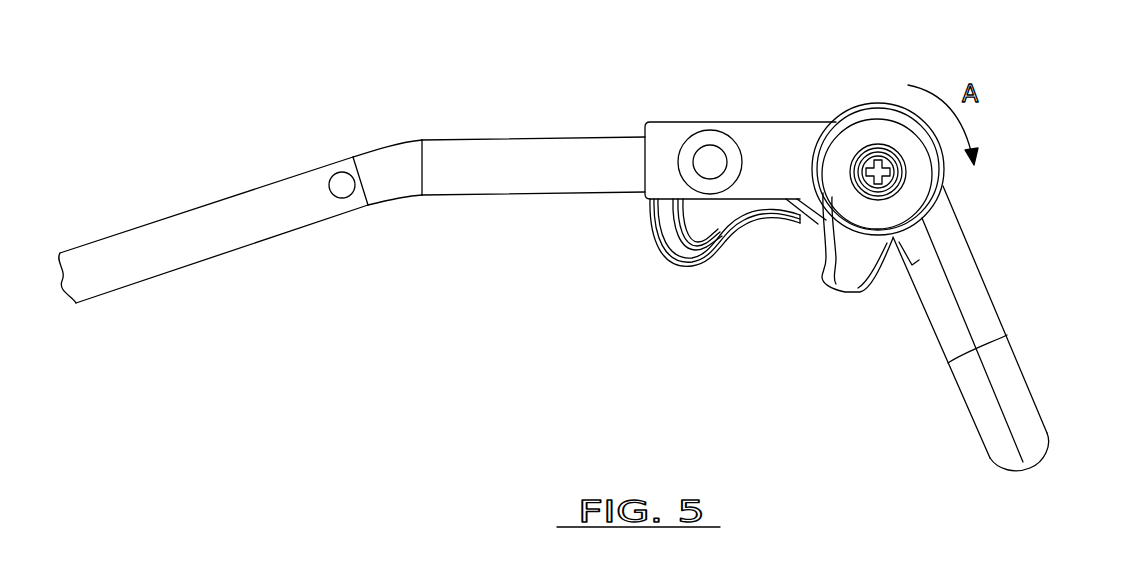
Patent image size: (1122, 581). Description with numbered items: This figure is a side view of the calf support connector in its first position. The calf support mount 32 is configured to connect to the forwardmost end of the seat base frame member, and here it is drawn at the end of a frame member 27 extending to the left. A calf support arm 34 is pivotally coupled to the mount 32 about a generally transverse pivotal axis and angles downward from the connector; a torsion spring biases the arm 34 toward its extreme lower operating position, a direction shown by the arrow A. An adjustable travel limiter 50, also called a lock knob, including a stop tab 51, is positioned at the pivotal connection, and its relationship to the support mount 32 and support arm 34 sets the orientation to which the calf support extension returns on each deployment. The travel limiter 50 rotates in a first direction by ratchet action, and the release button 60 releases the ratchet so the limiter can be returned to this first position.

The handle arm 27 is at (483, 134).
The calf support mount 32 is at (728, 108).
The calf support arm 34 is at (1000, 287).
The release button 60 is at (858, 167).
The adjustable travel limiter 50 is at (797, 253).
The stop tab 51 is at (848, 273).